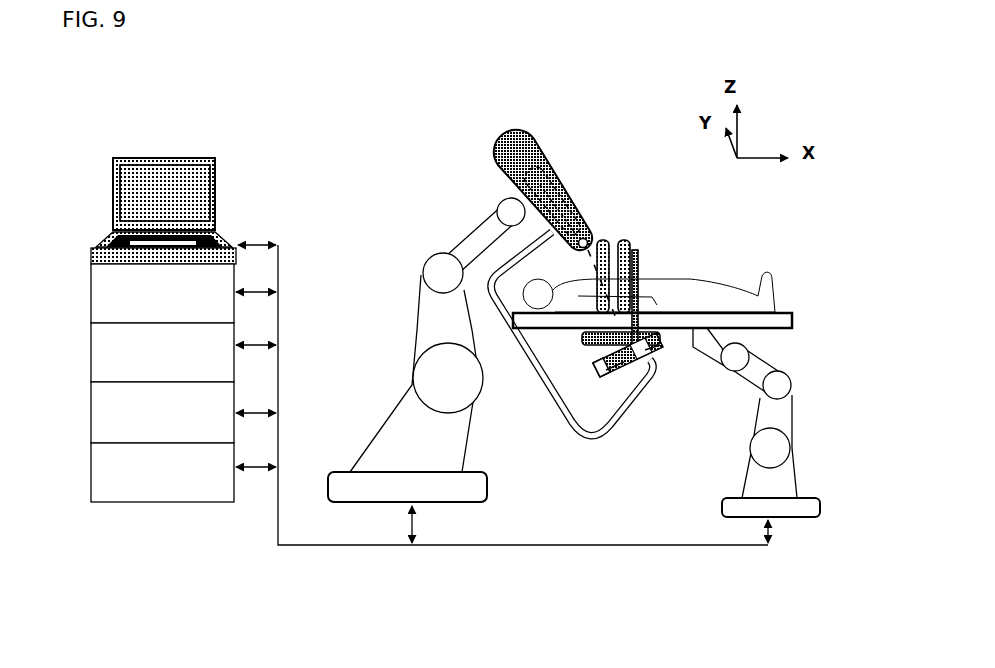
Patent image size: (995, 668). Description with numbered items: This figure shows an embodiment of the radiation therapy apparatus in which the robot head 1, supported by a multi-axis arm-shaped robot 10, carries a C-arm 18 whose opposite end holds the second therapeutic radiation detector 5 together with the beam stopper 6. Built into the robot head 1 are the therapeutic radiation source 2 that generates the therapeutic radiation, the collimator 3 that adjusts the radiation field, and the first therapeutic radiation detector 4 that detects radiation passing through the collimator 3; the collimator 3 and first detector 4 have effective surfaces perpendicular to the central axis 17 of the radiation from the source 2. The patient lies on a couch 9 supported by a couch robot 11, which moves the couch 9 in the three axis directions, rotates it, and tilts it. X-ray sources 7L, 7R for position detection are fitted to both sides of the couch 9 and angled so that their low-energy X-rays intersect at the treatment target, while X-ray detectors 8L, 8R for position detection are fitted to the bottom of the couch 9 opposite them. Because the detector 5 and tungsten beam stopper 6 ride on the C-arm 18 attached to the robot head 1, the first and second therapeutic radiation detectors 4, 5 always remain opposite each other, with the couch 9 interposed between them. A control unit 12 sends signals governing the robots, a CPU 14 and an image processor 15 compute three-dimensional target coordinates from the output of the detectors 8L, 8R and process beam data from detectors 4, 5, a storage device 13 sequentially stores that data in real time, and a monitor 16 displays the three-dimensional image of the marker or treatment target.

The robot head 1 is at (512, 143).
The therapeutic radiation source 2 is at (548, 167).
The collimator 3 is at (577, 207).
The first therapeutic radiation detector 4 is at (588, 234).
The second therapeutic radiation detector 5 is at (594, 362).
The beam stopper 6 is at (617, 365).
The X-ray source for position detection 7L is at (600, 250).
The X-ray source for position detection 7R is at (633, 253).
The X-ray detector for position detection 8L is at (582, 340).
The X-ray detector for position detection 8R is at (653, 358).
The couch 9 is at (792, 318).
The arm-shaped robot 10 is at (427, 310).
The couch robot 11 is at (792, 408).
The control unit 12 is at (90, 462).
The storage device 13 is at (90, 405).
The central processing unit 14 is at (90, 350).
The image processor 15 is at (90, 271).
The monitor 16 is at (218, 163).
The central axis 17 is at (638, 290).
The C-arm 18 is at (552, 393).